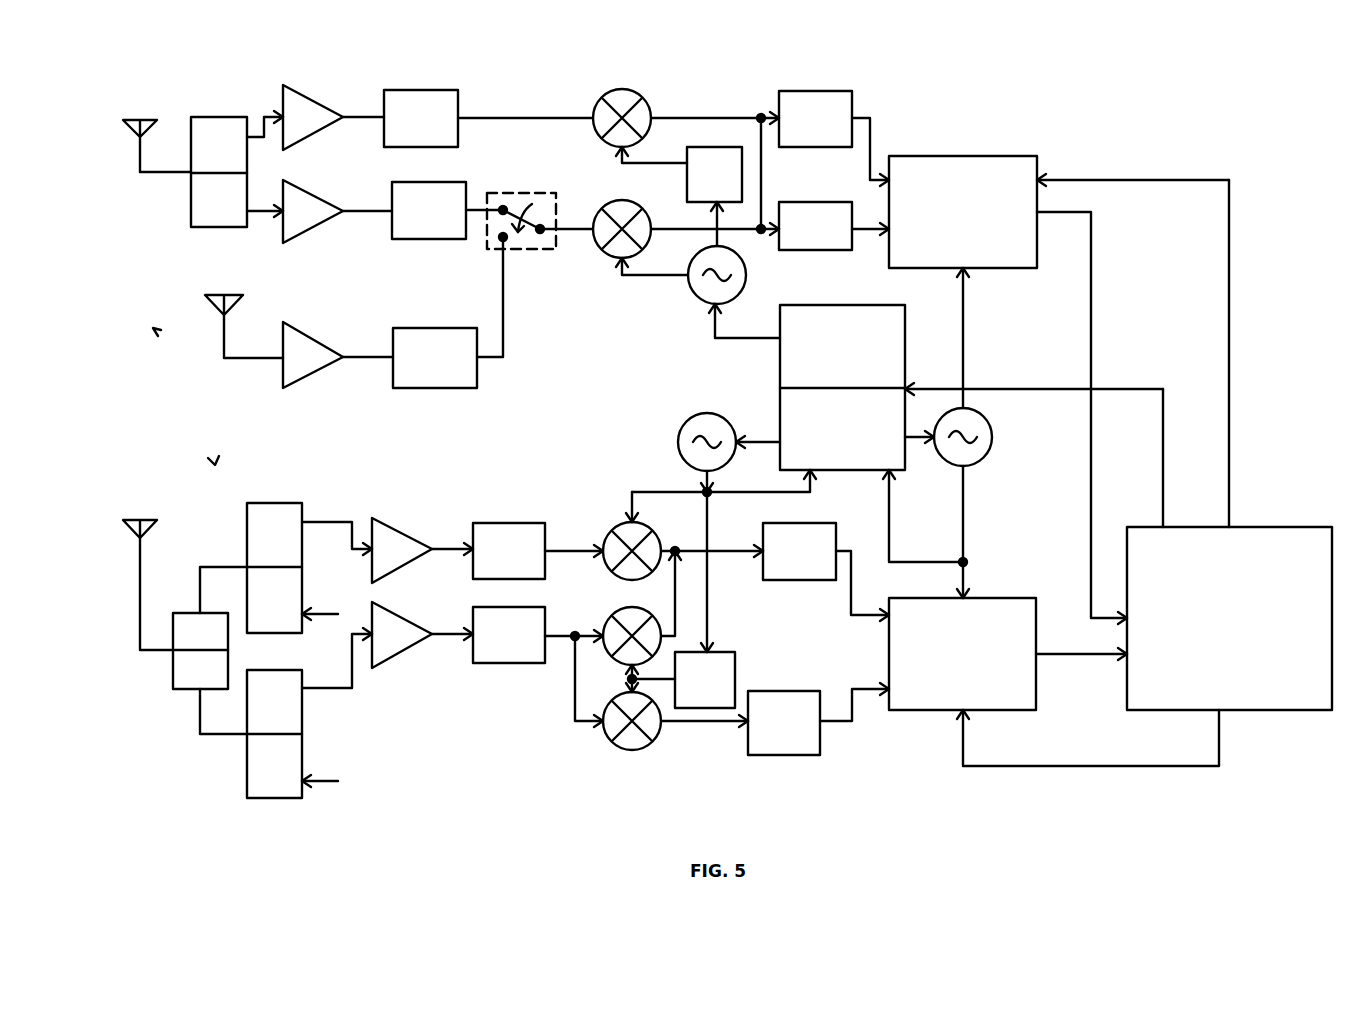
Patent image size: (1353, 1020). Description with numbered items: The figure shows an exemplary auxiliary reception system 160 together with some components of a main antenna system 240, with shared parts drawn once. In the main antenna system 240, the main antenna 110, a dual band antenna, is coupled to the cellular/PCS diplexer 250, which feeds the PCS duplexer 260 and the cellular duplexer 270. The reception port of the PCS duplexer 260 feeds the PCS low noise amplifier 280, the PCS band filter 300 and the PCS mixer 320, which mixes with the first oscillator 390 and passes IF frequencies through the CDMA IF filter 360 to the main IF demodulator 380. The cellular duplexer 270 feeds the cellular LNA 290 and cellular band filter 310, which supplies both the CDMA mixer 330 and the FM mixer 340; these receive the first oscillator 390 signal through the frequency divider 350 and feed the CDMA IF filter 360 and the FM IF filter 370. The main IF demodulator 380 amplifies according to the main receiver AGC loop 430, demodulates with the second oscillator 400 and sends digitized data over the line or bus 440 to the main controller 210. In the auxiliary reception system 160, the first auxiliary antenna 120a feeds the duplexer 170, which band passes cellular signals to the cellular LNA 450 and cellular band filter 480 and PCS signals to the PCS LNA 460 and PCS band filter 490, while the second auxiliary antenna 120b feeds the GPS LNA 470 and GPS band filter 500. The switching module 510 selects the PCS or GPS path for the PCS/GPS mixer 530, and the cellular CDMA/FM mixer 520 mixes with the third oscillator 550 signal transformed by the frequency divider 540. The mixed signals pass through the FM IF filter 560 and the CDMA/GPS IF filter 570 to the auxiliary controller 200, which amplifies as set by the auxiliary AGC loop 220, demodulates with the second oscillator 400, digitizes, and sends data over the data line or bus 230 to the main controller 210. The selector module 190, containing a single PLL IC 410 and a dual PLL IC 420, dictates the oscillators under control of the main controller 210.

The main antenna 110 is at (135, 518).
The first auxiliary antenna 120a is at (135, 118).
The second auxiliary antenna 120b is at (220, 296).
The auxiliary reception system 160 is at (153, 328).
The duplexer 170 is at (191, 192).
The selector module 190 is at (860, 305).
The auxiliary controller 200 is at (963, 212).
The main controller 210 is at (1229, 618).
The auxiliary automatic gain control loop 220 is at (1230, 230).
The data line or bus 230 is at (1092, 297).
The main antenna system 240 is at (215, 465).
The cellular/PCS diplexer 250 is at (173, 665).
The PCS duplexer 260 is at (276, 503).
The cellular duplexer 270 is at (247, 763).
The PCS low noise amplifier 280 is at (390, 520).
The cellular LNA 290 is at (408, 655).
The PCS band filter 300 is at (508, 523).
The cellular band filter 310 is at (508, 663).
The PCS mixer 320 is at (606, 535).
The CDMA mixer 330 is at (625, 608).
The FM mixer 340 is at (630, 750).
The frequency divider 350 is at (735, 680).
The CDMA IF filter 360 is at (797, 581).
The FM IF filter 370 is at (787, 756).
The main IF demodulator 380 is at (962, 654).
The first oscillator 390 is at (703, 414).
The second oscillator 400 is at (985, 452).
The single phase locked loop integrated circuit 410 is at (780, 356).
The dual PLL IC 420 is at (908, 456).
The main receiver AGC loop 430 is at (1060, 766).
The line or bus 440 is at (1088, 658).
The cellular LNA 450 is at (310, 100).
The PCS LNA 460 is at (312, 195).
The GPS LNA 470 is at (313, 342).
The cellular band filter 480 is at (425, 90).
The PCS band filter 490 is at (430, 182).
The GPS band filter 500 is at (428, 328).
The switching module 510 is at (534, 252).
The cellular CDMA/FM mixer 520 is at (620, 90).
The PCS/GPS mixer 530 is at (605, 205).
The frequency divider 540 is at (717, 147).
The third oscillator 550 is at (692, 300).
The FM IF filter 560 is at (815, 91).
The CDMA/GPS IF filter 570 is at (815, 202).